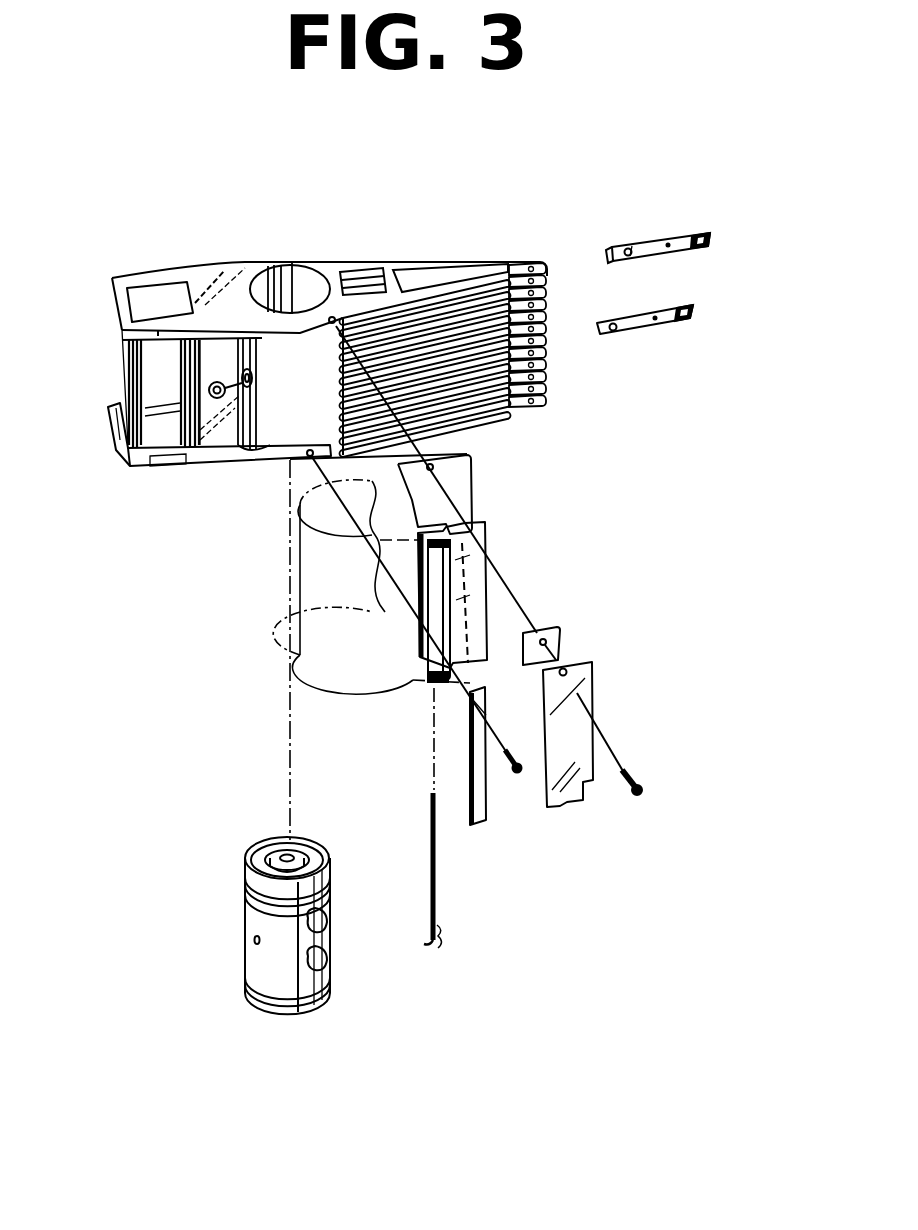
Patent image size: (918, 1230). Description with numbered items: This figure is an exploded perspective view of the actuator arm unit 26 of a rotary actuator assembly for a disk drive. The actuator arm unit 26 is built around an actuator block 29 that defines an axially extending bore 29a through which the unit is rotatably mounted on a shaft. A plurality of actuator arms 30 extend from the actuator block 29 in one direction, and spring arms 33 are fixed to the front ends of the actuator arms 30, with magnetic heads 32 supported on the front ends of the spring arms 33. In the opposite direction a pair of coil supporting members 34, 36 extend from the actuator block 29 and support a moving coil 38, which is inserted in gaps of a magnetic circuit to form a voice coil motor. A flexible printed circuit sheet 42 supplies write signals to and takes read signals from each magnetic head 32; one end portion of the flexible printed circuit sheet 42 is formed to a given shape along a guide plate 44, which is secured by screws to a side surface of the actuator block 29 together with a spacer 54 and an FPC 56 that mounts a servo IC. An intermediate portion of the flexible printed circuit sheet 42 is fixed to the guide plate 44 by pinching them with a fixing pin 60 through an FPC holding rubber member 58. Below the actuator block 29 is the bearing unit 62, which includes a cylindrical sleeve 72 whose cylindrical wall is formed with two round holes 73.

The actuator arm unit 26 is at (322, 262).
The actuator block 29 is at (263, 428).
The axially extending bore 29a is at (273, 268).
The actuator arms 30 is at (412, 262).
The magnetic heads 32 is at (698, 232).
The spring arms 33 is at (648, 242).
The coil supporting member 34 is at (210, 272).
The coil supporting member 36 is at (210, 463).
The moving coil 38 is at (125, 373).
The flexible printed circuit sheet 42 is at (473, 478).
The guide plate 44 is at (478, 565).
The spacer 54 is at (560, 636).
The FPC mounting a servo IC 56 is at (588, 693).
The FPC holding rubber member 58 is at (488, 792).
The fixing pin 60 is at (440, 892).
The bearing unit 62 is at (267, 1018).
The cylindrical sleeve 72 is at (253, 920).
The round holes 73 is at (325, 922).